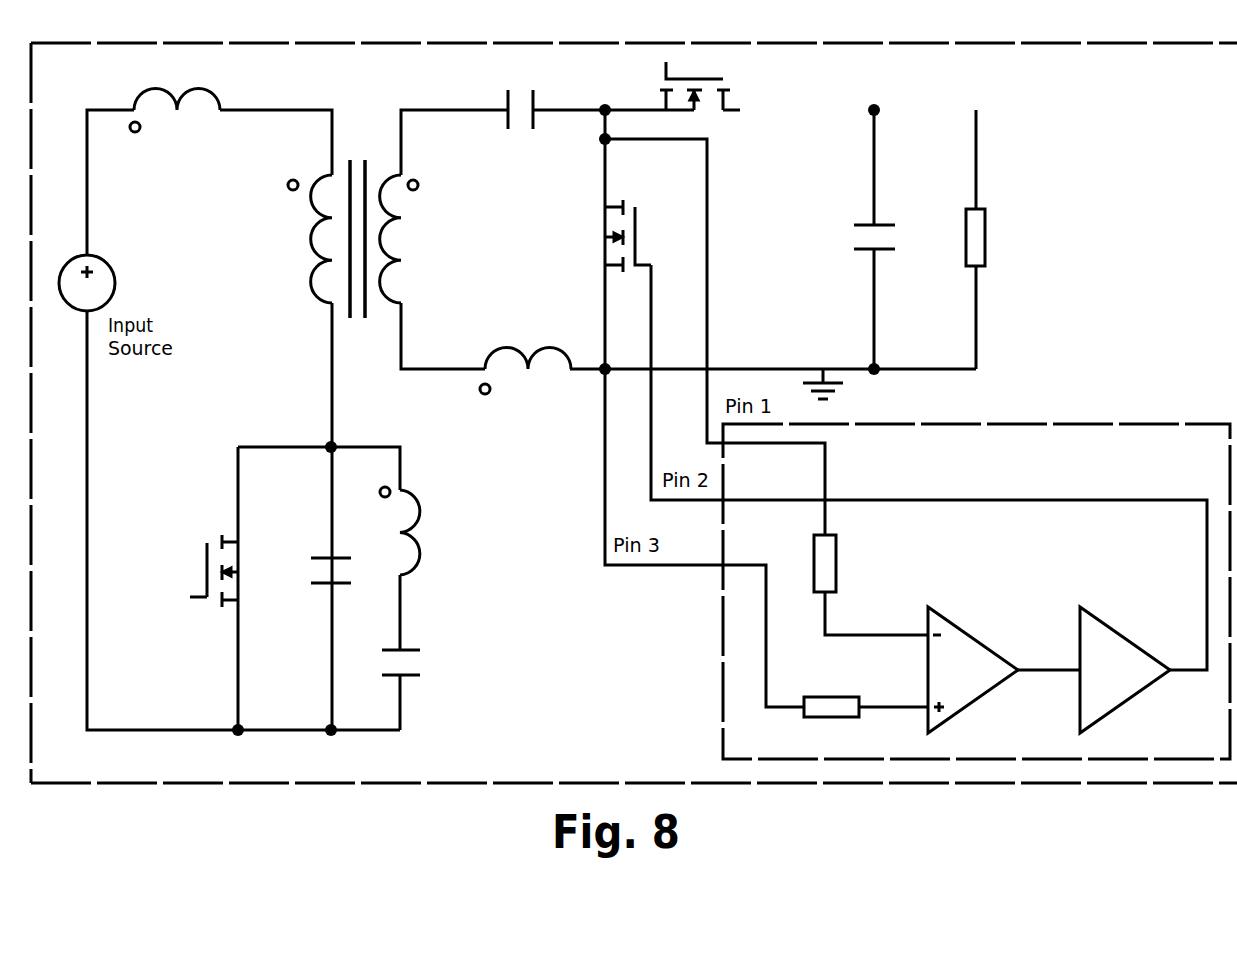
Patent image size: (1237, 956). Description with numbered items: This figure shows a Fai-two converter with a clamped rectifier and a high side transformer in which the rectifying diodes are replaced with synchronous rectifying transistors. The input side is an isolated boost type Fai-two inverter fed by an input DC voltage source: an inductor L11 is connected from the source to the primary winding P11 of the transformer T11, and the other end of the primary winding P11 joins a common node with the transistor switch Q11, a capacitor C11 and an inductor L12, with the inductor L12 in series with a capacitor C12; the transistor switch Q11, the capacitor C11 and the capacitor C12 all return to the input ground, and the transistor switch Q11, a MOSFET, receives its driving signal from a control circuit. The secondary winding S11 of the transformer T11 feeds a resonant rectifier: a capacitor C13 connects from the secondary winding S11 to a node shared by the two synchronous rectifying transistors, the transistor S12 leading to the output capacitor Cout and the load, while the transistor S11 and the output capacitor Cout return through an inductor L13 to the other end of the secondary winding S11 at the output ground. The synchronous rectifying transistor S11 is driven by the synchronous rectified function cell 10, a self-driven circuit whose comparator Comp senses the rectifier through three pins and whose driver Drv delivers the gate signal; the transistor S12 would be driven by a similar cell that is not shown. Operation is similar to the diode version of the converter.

The synchronous rectified function cell 10 is at (976, 545).
The inductor L11 is at (175, 117).
The primary winding P11 is at (299, 239).
The transformer T11 is at (402, 233).
The secondary winding / synchronous rectifying transistor S11 is at (532, 239).
The capacitor C13 is at (520, 124).
The synchronous rectifying transistor S12 is at (717, 86).
The inductor L13 is at (525, 377).
The output capacitor Cout is at (893, 221).
The transistor switch Q11 is at (213, 584).
The capacitor C11 is at (346, 554).
The inductor L12 is at (418, 531).
The capacitor C12 is at (417, 646).
The comparator Comp is at (973, 658).
The driver Drv is at (1125, 658).